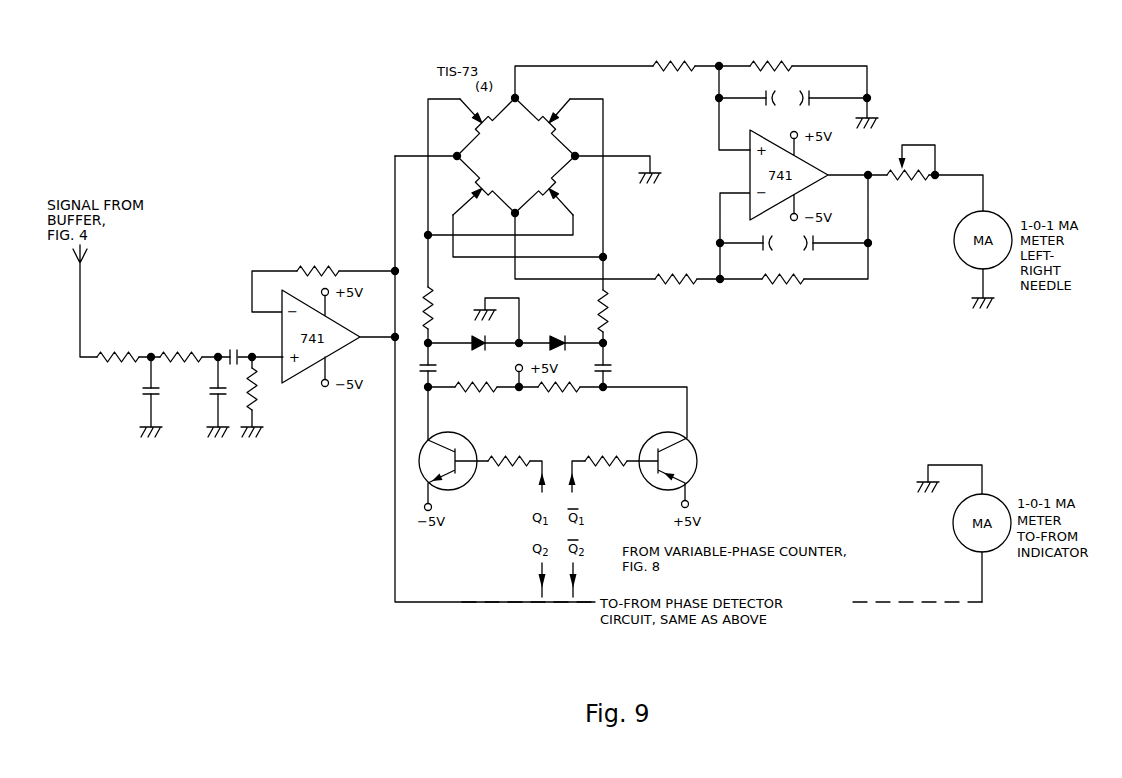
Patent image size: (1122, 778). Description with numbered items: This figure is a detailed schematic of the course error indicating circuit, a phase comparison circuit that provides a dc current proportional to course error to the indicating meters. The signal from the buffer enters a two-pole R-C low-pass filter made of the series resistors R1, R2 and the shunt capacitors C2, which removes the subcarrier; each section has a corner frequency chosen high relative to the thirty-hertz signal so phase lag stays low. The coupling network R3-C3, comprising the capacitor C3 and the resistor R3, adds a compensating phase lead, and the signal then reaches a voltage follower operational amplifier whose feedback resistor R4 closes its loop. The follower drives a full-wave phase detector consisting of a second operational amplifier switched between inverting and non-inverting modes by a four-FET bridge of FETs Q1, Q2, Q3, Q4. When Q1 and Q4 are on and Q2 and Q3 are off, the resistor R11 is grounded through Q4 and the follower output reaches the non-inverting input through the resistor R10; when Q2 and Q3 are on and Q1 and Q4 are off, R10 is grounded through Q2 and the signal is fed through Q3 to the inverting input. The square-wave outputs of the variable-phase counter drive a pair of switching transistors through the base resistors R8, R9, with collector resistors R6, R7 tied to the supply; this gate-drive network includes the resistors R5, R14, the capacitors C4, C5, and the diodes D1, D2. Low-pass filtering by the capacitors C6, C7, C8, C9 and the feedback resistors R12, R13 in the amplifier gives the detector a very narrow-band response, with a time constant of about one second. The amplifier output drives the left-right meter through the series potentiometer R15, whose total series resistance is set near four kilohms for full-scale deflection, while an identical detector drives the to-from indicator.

The low-pass filter resistor R1 is at (118, 338).
The low-pass filter resistor R2 is at (181, 338).
The coupling network resistor R3 is at (264, 397).
The feedback resistor R4 is at (318, 253).
The FET gate resistor R5 is at (617, 311).
The switching transistor collector resistor R6 is at (476, 398).
The switching transistor collector resistor R7 is at (567, 398).
The base resistor R8 is at (509, 479).
The base resistor R9 is at (606, 479).
The non-inverting input resistor R10 is at (674, 48).
The inverting input resistor R11 is at (676, 261).
The low-pass feedback resistor R12 is at (771, 48).
The low-pass feedback resistor R13 is at (783, 299).
The FET gate resistor R14 is at (441, 307).
The meter series potentiometer R15 is at (913, 183).
The low-pass filter capacitor C2 is at (163, 397).
The coupling capacitor C3 is at (241, 339).
The switching network capacitor C4 is at (437, 369).
The switching network capacitor C5 is at (612, 369).
The low-pass filter capacitor C6 is at (757, 98).
The low-pass filter capacitor C7 is at (814, 98).
The low-pass filter capacitor C8 is at (757, 243).
The low-pass filter capacitor C9 is at (819, 243).
The diode D1 is at (467, 336).
The diode D2 is at (558, 325).
The FET Q1 is at (486, 127).
The FET Q2 is at (545, 127).
The FET Q3 is at (484, 185).
The FET Q4 is at (545, 185).